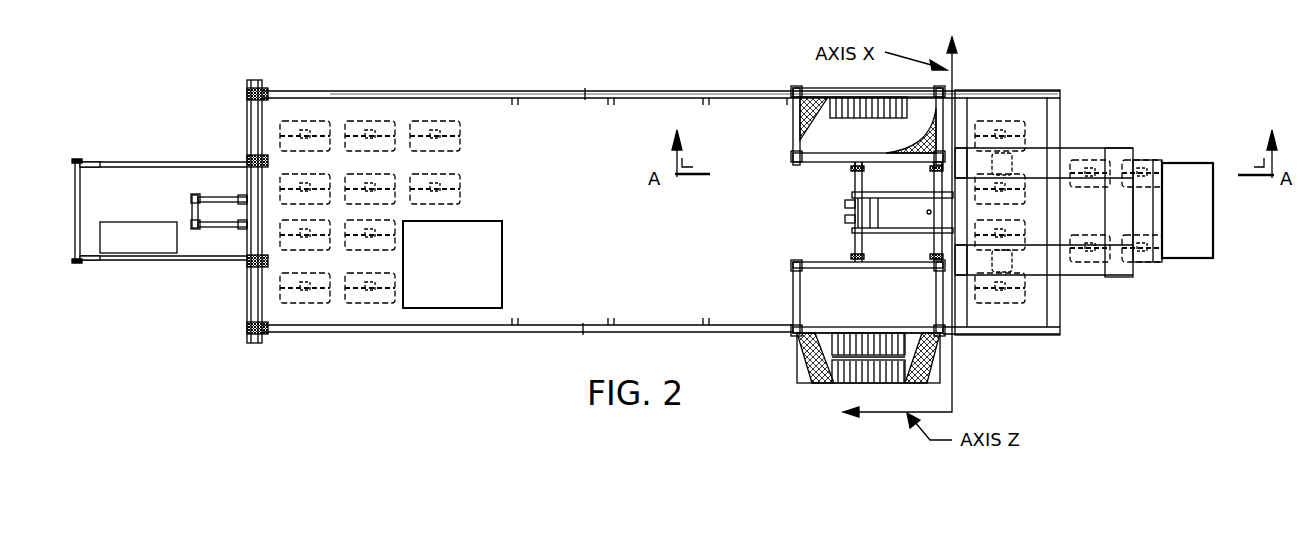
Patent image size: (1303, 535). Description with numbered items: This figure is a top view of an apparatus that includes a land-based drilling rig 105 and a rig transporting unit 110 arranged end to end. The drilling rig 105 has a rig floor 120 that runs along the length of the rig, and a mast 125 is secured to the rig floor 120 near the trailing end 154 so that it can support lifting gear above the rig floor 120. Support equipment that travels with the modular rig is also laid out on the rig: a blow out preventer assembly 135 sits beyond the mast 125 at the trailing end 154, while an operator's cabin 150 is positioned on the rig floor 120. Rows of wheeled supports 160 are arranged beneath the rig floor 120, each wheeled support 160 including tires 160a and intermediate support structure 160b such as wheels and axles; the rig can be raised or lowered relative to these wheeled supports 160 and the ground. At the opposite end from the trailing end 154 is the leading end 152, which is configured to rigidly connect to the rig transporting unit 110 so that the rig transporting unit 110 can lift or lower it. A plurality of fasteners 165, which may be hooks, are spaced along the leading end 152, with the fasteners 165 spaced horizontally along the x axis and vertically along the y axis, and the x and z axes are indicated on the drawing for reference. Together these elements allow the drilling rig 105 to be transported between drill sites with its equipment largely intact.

The land-based drilling rig 105 is at (420, 91).
The rig transporting unit 110 is at (1215, 210).
The rig floor 120 is at (650, 110).
The mast 125 is at (192, 207).
The blow out preventer assembly 135 is at (142, 261).
The operator's cabin 150 is at (502, 262).
The leading end 152 is at (943, 117).
The trailing end 154 is at (247, 113).
The wheeled support 160 is at (319, 256).
The tires 160a is at (326, 302).
The intermediate support structure 160b is at (290, 302).
The fasteners 165 is at (957, 165).